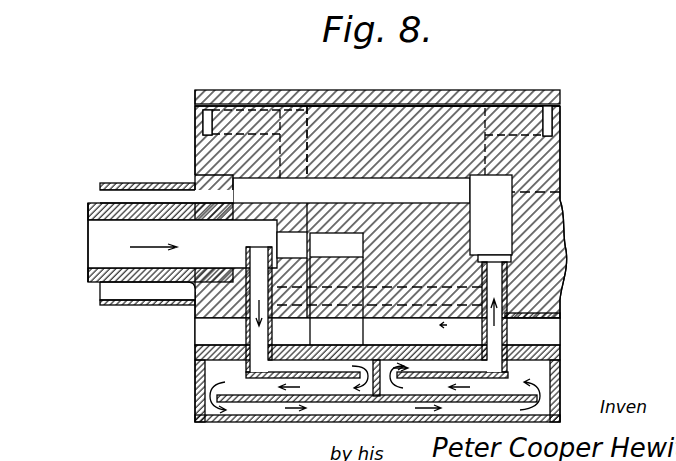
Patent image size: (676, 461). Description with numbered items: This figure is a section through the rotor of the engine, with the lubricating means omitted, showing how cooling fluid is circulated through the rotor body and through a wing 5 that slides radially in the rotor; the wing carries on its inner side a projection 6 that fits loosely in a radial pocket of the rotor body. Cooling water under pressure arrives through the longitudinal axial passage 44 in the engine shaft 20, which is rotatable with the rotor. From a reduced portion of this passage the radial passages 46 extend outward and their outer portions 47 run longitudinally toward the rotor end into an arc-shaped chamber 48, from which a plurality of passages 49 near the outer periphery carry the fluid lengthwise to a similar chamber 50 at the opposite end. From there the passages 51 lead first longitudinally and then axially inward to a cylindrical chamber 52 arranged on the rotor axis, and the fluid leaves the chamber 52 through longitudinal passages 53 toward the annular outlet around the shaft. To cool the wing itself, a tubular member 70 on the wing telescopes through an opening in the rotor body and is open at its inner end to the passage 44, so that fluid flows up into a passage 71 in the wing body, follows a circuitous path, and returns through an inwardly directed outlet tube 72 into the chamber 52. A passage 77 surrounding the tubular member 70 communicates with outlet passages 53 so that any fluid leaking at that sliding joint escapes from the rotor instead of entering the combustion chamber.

The wing 5 is at (423, 354).
The projection 6 is at (350, 337).
The engine shaft 20 is at (95, 282).
The longitudinal axial passage 44 is at (107, 240).
The radial passage 46 is at (293, 150).
The longitudinal outer portion of passage 47 is at (226, 138).
The arc-shaped chamber 48 is at (205, 104).
The passage 49 is at (465, 104).
The chamber 50 is at (549, 117).
The passage 51 is at (497, 128).
The chamber 52 is at (497, 220).
The passage 53 is at (393, 185).
The tubular member 70 is at (246, 330).
The passage 71 is at (323, 385).
The outlet tube 72 is at (495, 328).
The passage 77 is at (248, 287).